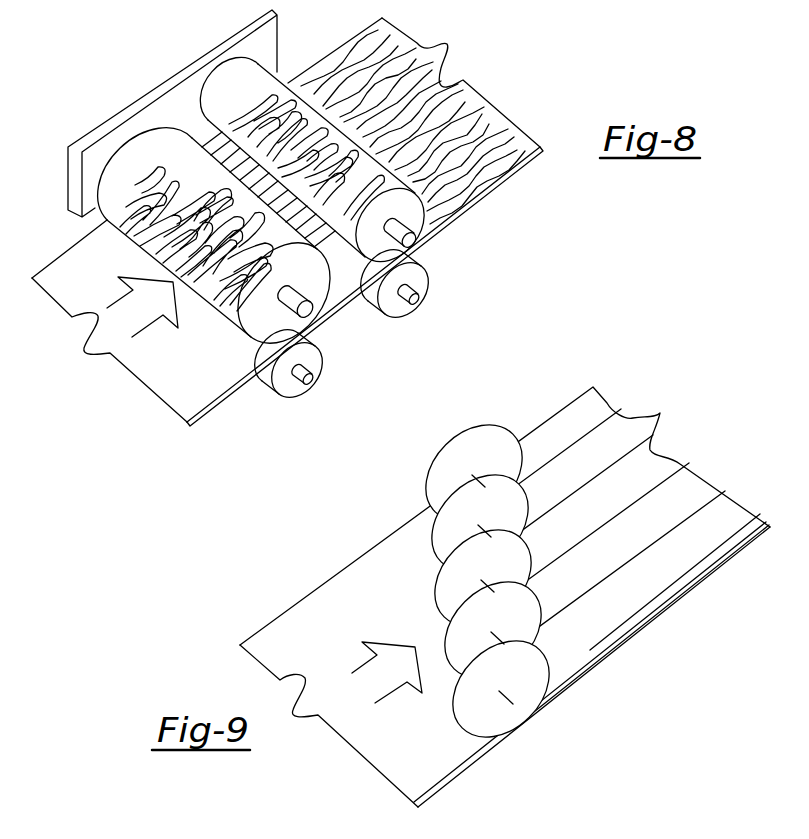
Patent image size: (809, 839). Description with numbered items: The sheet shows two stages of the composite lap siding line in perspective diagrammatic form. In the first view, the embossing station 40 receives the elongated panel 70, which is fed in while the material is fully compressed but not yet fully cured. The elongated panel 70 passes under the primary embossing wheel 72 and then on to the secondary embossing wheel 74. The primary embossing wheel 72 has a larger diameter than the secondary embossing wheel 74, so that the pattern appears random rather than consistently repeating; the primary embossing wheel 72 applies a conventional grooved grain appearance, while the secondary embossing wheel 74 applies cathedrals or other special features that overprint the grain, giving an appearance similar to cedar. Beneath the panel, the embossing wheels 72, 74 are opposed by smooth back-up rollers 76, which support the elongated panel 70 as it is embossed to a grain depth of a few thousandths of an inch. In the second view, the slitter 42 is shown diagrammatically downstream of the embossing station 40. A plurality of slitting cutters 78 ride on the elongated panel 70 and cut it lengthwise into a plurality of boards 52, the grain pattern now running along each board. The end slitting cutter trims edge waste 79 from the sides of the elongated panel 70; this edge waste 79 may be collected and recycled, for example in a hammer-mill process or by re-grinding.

In FIG. 8, the embossing station 40 is at (159, 54).
In FIG. 8, the elongated panel 70 is at (58, 268).
In FIG. 8, the primary embossing wheel 72 is at (253, 318).
In FIG. 8, the secondary embossing wheel 74 is at (412, 213).
In FIG. 8, the smooth back-up rollers 76 is at (320, 357).
In FIG. 9, the slitter 42 is at (272, 608).
In FIG. 9, the boards 52 is at (624, 430).
In FIG. 9, the slitting cutters 78 is at (462, 498).
In FIG. 9, the edge waste 79 is at (666, 607).